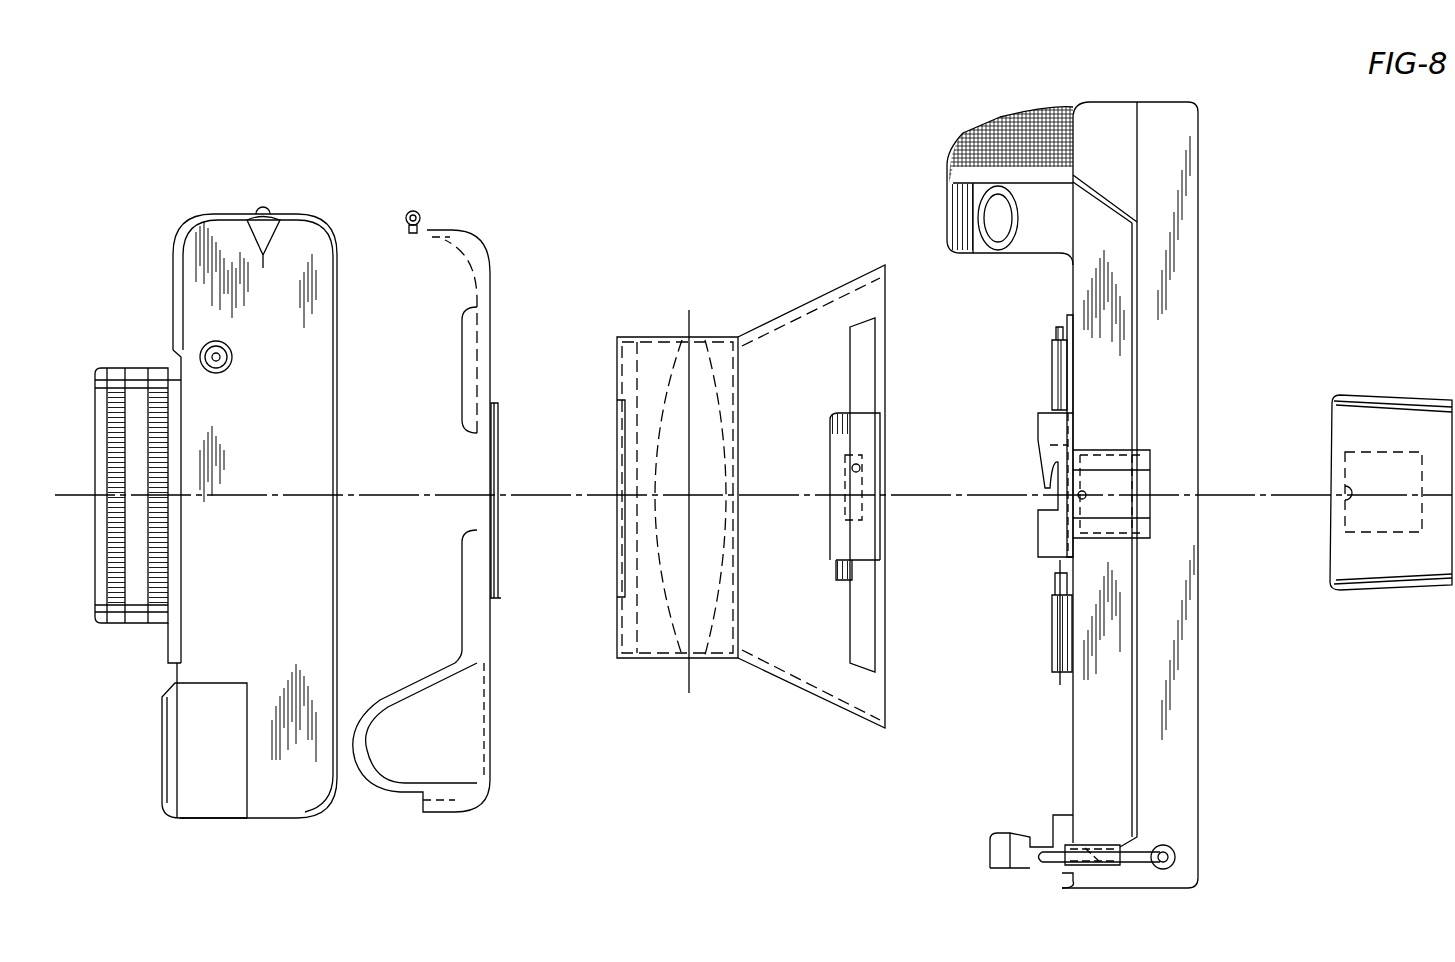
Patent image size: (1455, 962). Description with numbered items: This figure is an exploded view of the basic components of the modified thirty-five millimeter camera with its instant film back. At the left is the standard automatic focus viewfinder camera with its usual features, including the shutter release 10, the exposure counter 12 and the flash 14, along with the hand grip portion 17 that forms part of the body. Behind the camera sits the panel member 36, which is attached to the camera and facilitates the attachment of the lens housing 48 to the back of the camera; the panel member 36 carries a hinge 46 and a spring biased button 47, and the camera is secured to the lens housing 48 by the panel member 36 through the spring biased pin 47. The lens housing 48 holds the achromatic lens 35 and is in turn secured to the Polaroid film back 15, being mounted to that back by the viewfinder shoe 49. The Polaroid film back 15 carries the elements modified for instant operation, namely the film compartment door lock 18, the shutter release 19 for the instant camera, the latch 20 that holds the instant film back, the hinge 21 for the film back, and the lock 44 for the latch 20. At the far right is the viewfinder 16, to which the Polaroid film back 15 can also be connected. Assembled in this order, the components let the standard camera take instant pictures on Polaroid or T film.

The shutter release 10 is at (200, 352).
The exposure counter 12 is at (276, 232).
The flash 14 is at (165, 777).
The Polaroid film back 15 is at (1200, 303).
The viewfinder 16 is at (1418, 395).
The hand grip portion 17 is at (963, 135).
The film compartment door lock 18 is at (1048, 867).
The shutter release for an instant camera 19 is at (990, 232).
The latch 20 is at (835, 578).
The hinge 21 is at (1052, 672).
The achromatic lens 35 is at (672, 648).
The panel member 36 is at (490, 258).
The lock for the latch 44 is at (1038, 432).
The hinge 46 is at (416, 212).
The spring biased button 47 is at (412, 240).
The lens housing 48 is at (780, 318).
The viewfinder shoe 49 is at (1150, 452).